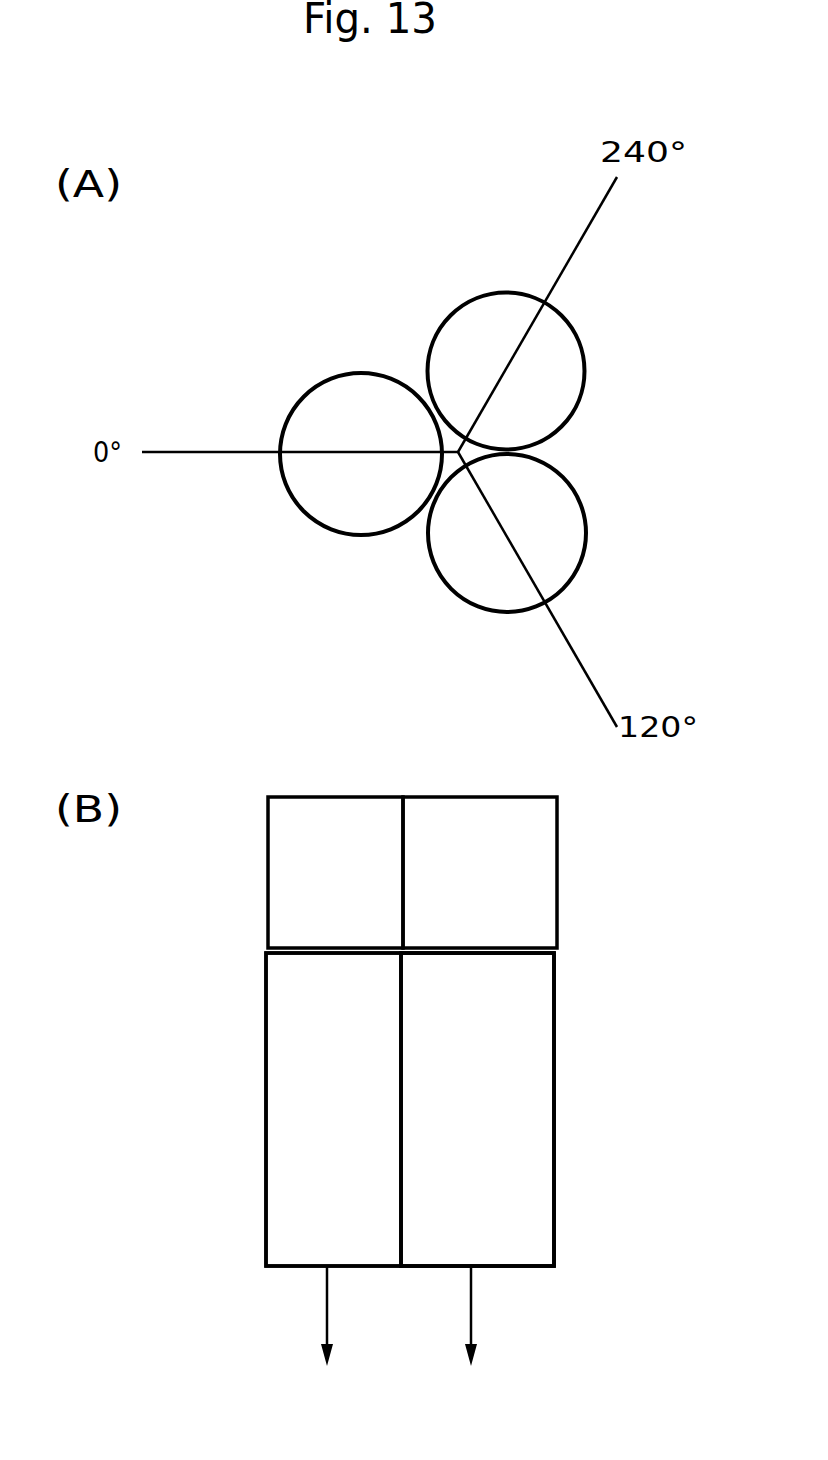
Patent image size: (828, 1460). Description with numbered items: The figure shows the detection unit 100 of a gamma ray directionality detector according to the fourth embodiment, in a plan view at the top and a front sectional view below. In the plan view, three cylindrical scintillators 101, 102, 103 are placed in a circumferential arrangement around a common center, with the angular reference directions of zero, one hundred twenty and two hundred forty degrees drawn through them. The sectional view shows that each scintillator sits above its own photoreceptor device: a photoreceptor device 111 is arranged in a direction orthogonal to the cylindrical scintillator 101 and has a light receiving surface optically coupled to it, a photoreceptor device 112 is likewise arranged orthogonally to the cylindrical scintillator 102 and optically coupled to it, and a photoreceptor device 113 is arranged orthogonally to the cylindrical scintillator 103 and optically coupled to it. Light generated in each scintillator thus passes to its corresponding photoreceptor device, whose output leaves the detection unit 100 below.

The detection unit 100 is at (566, 1160).
The cylindrical scintillator 101 is at (337, 393).
The cylindrical scintillator 102 is at (576, 552).
The cylindrical scintillator 103 is at (577, 374).
The photoreceptor device 111 is at (292, 1066).
The photoreceptor device 112 is at (540, 1075).
The photoreceptor device 113 is at (477, 1109).